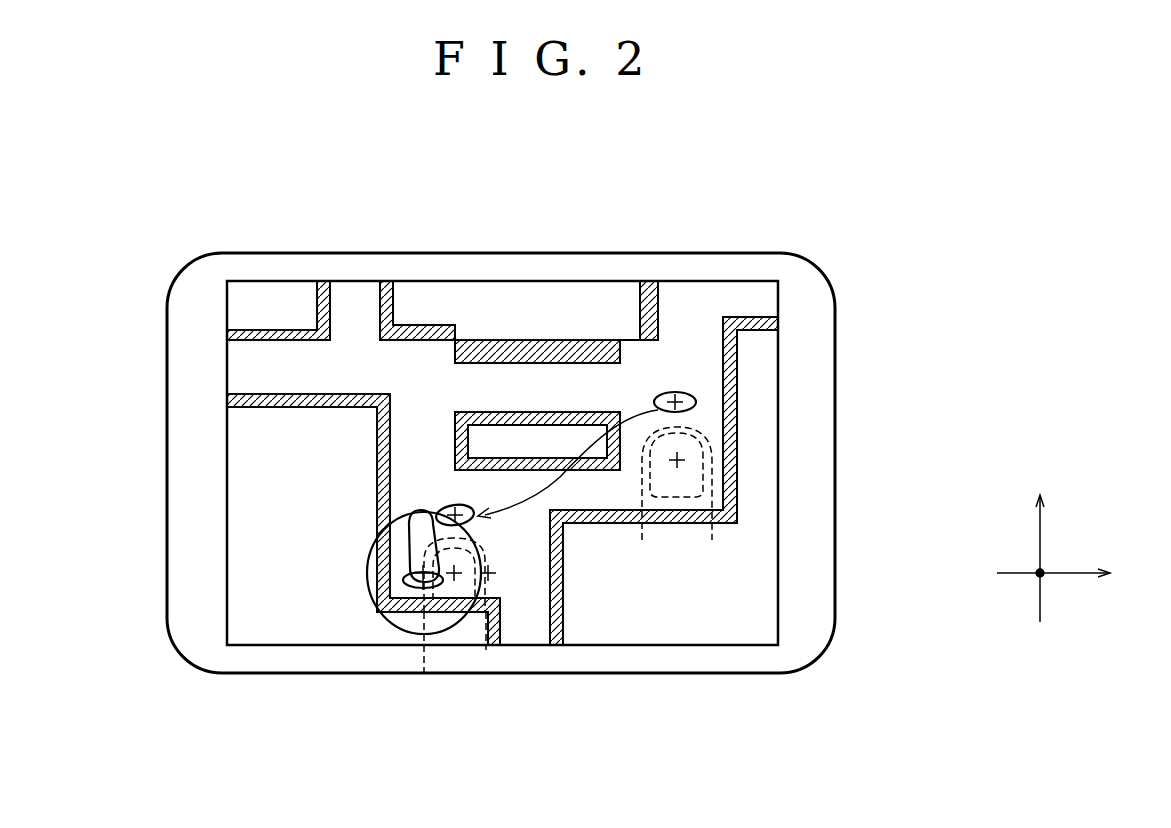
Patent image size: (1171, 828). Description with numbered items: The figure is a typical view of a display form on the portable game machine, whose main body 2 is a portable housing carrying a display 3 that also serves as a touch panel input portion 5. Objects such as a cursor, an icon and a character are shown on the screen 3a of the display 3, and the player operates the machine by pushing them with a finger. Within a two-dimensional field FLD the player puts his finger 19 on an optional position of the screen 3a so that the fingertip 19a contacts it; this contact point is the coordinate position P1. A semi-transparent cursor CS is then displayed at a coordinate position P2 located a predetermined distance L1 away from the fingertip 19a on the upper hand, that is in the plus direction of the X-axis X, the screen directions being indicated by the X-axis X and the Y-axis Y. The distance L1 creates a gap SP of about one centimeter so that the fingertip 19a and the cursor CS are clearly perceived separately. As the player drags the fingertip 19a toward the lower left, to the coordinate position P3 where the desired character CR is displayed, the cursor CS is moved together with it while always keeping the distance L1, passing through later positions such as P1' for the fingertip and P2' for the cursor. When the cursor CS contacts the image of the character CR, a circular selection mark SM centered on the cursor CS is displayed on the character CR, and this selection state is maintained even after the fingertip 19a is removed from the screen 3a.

The main body 2 is at (857, 612).
The display 3 is at (525, 531).
The touch panel input portion 5 is at (718, 650).
The screen 3a is at (753, 568).
The finger 19 is at (642, 530).
The fingertip 19a is at (488, 572).
The two-dimensional field FLD is at (733, 293).
The gap SP is at (703, 416).
The cursor CS is at (668, 391).
The character CR is at (432, 511).
The selection mark SM is at (386, 626).
The coordinate position P1 is at (772, 444).
The first moved position P1' is at (456, 645).
The coordinate position P2 is at (686, 352).
The second moved position P2' is at (436, 463).
The coordinate position P3 is at (420, 571).
The predetermined distance L1 is at (857, 390).
The X-axis X is at (1041, 542).
The Y axis Y is at (1066, 570).